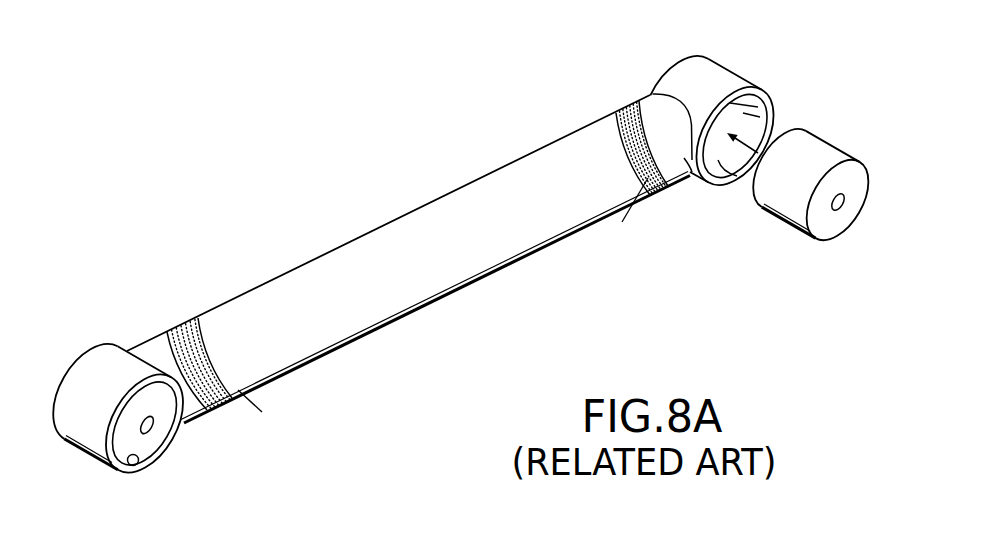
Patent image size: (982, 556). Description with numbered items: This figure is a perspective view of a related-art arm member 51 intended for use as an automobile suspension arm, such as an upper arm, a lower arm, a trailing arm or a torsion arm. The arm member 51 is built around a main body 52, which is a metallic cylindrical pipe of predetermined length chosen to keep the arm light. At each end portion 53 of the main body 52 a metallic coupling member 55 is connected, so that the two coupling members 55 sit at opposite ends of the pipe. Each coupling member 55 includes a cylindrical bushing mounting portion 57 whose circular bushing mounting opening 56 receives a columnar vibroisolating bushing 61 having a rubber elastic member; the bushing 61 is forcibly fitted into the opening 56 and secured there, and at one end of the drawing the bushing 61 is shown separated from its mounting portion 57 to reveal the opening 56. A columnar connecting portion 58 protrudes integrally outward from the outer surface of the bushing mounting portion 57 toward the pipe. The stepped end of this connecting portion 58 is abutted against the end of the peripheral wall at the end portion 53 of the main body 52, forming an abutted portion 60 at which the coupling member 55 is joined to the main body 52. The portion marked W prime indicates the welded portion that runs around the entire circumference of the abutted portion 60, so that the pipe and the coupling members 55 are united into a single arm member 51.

The arm member 51 is at (322, 180).
The main body 52 is at (438, 225).
The end portion 53 is at (200, 327).
The coupling member 55 is at (90, 367).
The bushing mounting opening 56 is at (136, 465).
The bushing mounting portion 57 is at (87, 436).
The connecting portion 58 is at (189, 411).
The abutted portion 60 is at (203, 322).
The vibroisolating bushing 61 is at (157, 435).